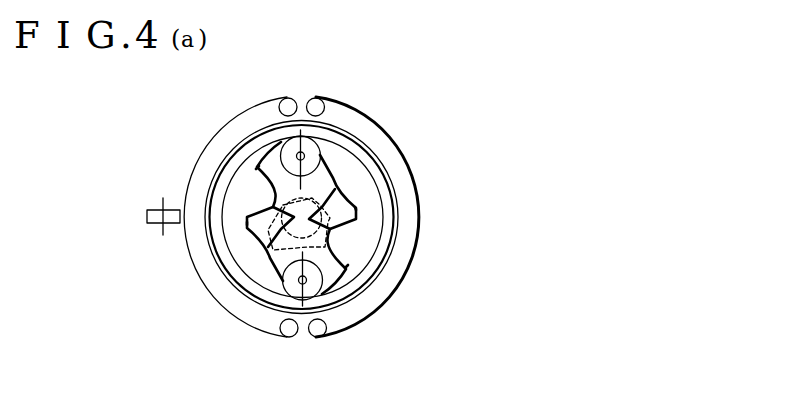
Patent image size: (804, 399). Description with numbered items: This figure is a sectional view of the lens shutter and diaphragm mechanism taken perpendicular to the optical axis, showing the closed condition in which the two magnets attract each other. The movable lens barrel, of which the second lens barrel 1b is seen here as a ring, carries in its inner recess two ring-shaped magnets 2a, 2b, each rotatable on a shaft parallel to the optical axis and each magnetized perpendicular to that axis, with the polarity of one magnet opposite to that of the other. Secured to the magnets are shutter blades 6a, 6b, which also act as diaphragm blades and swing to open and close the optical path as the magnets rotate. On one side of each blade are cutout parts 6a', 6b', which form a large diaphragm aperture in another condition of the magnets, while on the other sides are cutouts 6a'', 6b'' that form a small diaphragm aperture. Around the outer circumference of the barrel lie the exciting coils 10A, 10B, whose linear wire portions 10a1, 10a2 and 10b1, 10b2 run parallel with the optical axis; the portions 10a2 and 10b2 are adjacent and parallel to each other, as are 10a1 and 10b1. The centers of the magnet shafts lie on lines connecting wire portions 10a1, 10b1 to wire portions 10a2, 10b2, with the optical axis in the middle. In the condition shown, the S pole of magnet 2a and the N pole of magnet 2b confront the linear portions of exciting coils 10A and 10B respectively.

The exciting coil 10A is at (227, 142).
The exciting coil 10B is at (410, 204).
The second lens barrel 1b is at (343, 293).
The wire portion 10a1 is at (288, 337).
The wire portion 10a2 is at (286, 100).
The wire portion 10b1 is at (317, 337).
The wire portion 10b2 is at (316, 100).
The ring-shaped magnet 2a is at (318, 149).
The ring-shaped magnet 2b is at (275, 293).
The shutter blade 6a is at (377, 204).
The shutter blade 6b is at (349, 234).
The cutout part 6a' is at (196, 222).
The cutout 6a'' is at (412, 176).
The cutout part 6b' is at (407, 243).
The cutout 6b'' is at (197, 265).